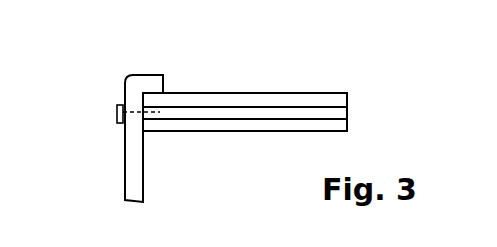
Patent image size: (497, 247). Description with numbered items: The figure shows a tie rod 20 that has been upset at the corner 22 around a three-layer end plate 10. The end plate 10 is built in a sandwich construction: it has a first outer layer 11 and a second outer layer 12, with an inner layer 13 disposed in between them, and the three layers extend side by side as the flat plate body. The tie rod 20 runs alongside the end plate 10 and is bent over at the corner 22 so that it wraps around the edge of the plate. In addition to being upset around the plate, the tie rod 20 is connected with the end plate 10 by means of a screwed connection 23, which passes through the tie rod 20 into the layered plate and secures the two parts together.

The end plate 10 is at (275, 84).
The first outer layer 11 is at (347, 95).
The second outer layer 12 is at (347, 128).
The inner layer 13 is at (347, 113).
The tie rod 20 is at (124, 173).
The corner 22 is at (135, 83).
The screwed connection 23 is at (117, 112).